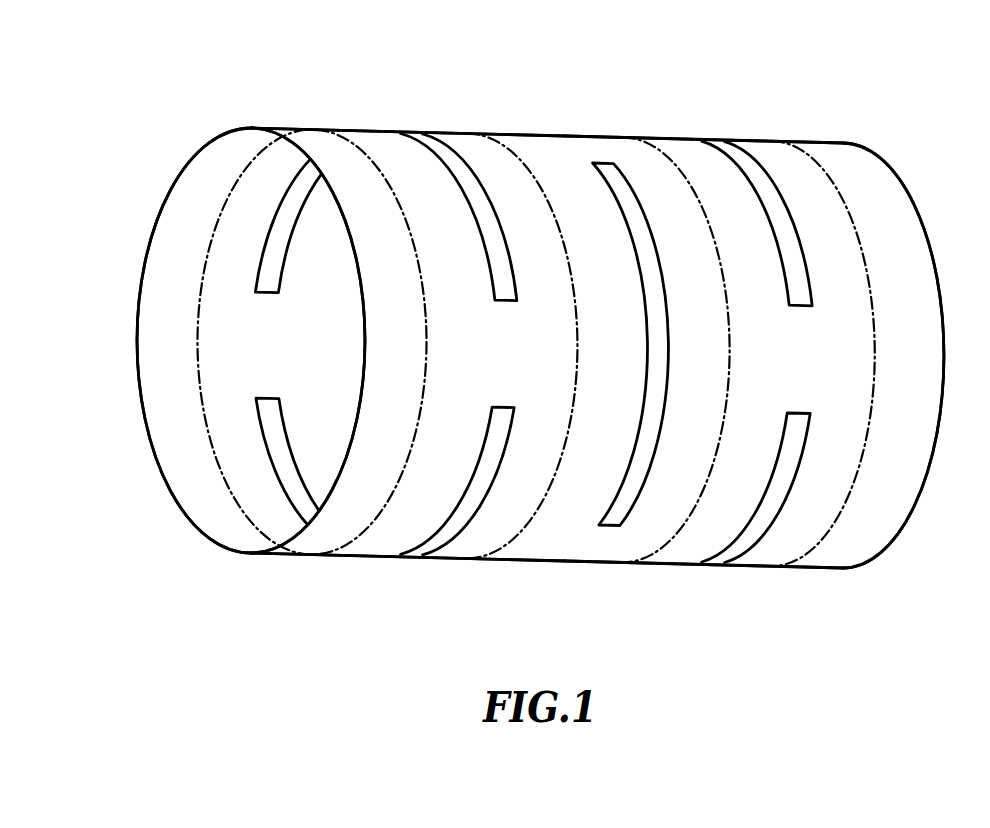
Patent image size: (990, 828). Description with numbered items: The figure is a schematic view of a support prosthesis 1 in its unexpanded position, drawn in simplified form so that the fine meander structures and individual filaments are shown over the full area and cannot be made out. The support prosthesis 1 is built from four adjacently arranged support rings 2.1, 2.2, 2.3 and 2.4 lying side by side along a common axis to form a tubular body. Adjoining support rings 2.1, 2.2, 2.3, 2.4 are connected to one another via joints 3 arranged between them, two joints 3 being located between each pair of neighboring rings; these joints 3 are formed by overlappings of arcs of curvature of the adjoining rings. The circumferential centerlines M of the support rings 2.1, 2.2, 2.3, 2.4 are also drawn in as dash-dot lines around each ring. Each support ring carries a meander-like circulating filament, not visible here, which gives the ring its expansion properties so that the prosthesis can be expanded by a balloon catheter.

The support prosthesis 1 is at (372, 574).
The support ring 2.1 is at (338, 128).
The support ring 2.2 is at (485, 132).
The support ring 2.3 is at (632, 137).
The support ring 2.4 is at (785, 140).
The joint 3 is at (590, 147).
The circumferential centerline M is at (430, 388).